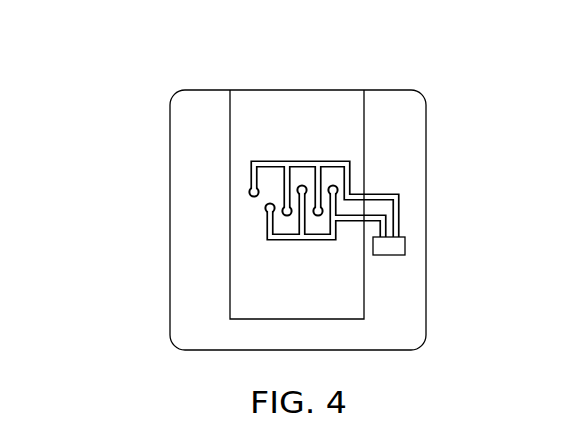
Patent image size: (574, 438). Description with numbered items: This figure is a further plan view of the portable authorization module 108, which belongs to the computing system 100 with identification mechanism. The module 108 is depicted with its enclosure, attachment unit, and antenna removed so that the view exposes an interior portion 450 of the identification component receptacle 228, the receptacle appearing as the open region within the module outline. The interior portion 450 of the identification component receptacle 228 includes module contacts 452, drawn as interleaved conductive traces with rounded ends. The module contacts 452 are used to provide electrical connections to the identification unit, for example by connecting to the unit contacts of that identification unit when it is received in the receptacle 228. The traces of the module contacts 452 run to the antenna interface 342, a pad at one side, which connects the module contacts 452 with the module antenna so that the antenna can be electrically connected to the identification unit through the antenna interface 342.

The computing system 100 is at (283, 186).
The portable authorization module 108 is at (170, 185).
The identification component receptacle 228 is at (303, 112).
The interior portion 450 is at (310, 205).
The module contacts 452 is at (275, 240).
The antenna interface 342 is at (393, 245).